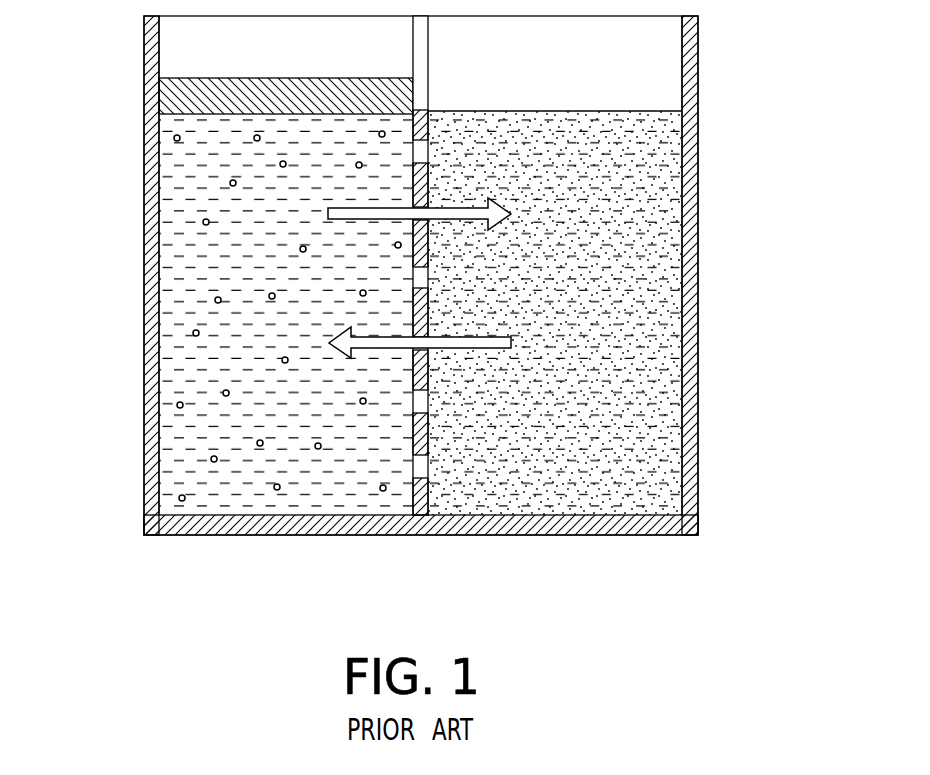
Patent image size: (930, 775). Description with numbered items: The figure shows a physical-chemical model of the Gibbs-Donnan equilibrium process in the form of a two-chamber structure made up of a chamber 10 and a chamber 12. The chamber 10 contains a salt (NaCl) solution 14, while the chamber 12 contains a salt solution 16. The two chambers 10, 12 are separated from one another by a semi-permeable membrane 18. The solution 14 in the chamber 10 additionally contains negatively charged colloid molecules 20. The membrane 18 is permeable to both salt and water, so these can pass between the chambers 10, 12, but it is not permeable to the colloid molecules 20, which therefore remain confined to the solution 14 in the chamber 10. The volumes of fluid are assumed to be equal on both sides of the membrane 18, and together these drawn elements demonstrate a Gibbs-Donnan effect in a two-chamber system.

The chamber 10 is at (124, 478).
The chamber 12 is at (720, 474).
The salt solution 14 is at (213, 194).
The salt solution 16 is at (652, 160).
The semi-permeable membrane 18 is at (429, 180).
The negatively charged colloid molecules 20 is at (260, 447).